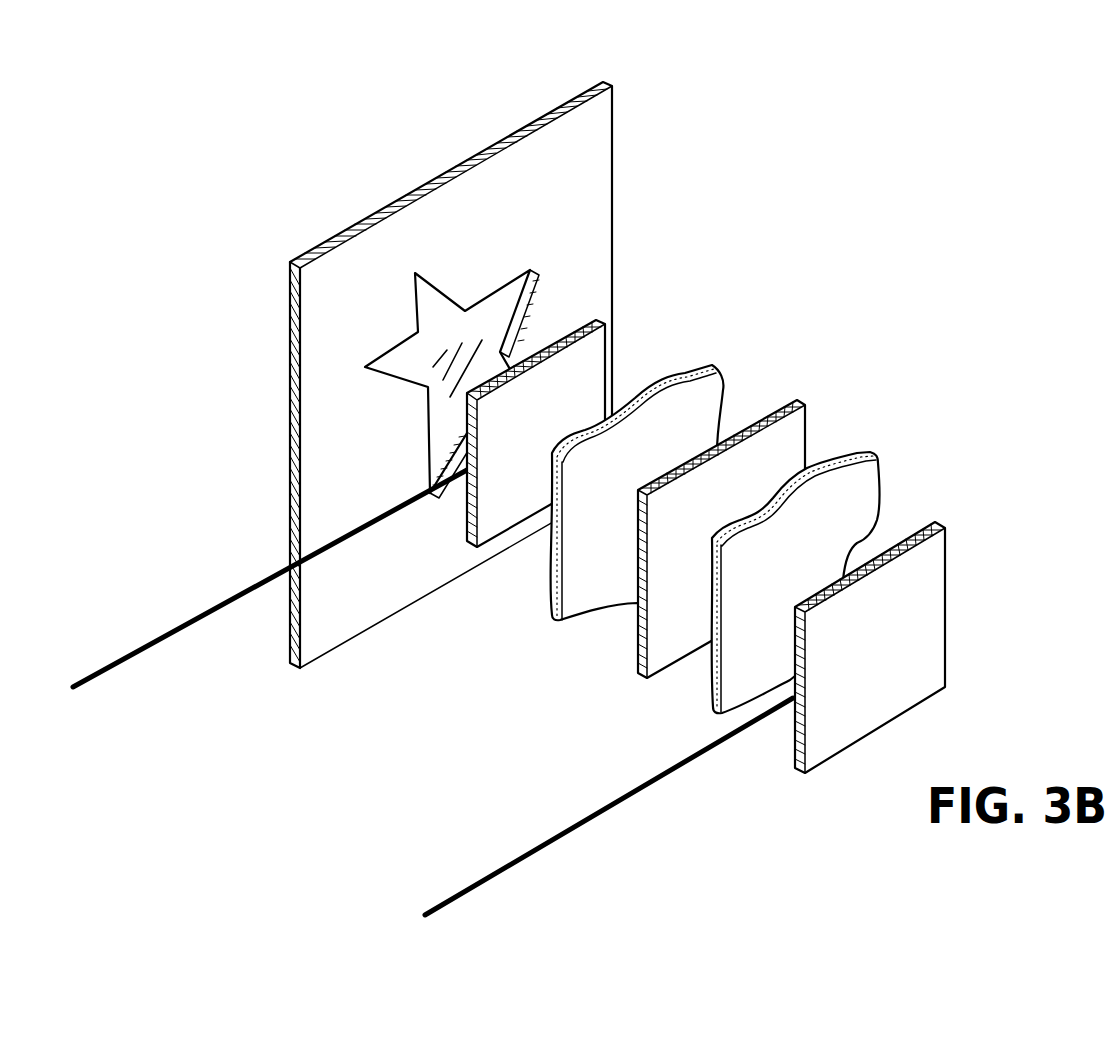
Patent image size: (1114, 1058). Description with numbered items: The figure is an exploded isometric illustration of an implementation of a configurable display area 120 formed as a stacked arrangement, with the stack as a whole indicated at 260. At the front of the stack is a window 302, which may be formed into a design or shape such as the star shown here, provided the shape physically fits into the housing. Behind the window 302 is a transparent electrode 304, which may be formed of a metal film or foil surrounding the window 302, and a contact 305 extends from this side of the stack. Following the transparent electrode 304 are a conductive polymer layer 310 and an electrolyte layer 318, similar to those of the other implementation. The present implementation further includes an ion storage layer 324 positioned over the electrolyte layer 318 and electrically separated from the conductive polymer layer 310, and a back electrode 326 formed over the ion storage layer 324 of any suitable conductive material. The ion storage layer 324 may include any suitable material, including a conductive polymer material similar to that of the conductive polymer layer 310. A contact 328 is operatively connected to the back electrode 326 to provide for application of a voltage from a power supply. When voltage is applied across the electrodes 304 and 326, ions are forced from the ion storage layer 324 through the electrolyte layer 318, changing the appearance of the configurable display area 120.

The configurable display area 120 is at (527, 167).
The optical assembly 260 is at (815, 157).
The window 302 is at (440, 420).
The transparent electrode 304 is at (503, 493).
The contact 305 is at (227, 600).
The conductive polymer layer 310 is at (570, 613).
The electrolyte layer 318 is at (783, 465).
The ion storage layer 324 is at (857, 543).
The back electrode 326 is at (920, 633).
The contact 328 is at (573, 827).